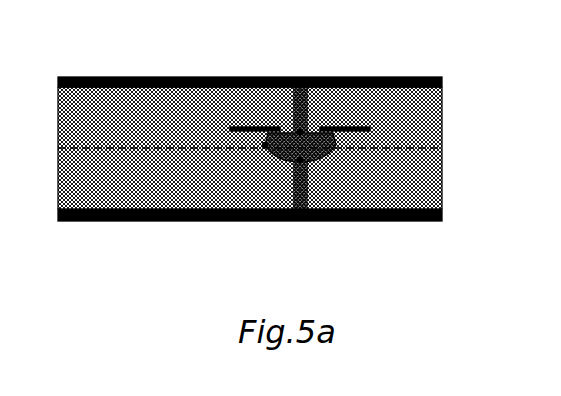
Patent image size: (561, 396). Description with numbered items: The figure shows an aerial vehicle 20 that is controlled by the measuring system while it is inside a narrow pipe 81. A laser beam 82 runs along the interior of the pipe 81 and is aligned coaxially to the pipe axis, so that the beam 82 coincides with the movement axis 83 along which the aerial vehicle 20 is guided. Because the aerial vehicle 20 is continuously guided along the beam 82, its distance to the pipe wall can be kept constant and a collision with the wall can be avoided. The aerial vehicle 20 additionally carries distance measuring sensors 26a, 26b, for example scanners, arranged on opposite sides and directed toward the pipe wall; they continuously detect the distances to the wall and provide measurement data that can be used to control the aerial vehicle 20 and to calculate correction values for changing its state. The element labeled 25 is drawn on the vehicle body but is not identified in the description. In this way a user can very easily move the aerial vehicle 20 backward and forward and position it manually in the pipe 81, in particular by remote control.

The pipe 81 is at (253, 127).
The laser beam 82 is at (250, 94).
The movement axis 83 is at (271, 133).
The aerial vehicle 20 is at (291, 147).
The electrode cavity 25 is at (272, 194).
The distance measuring sensor 26a is at (344, 207).
The distance measuring sensor 26b is at (247, 87).